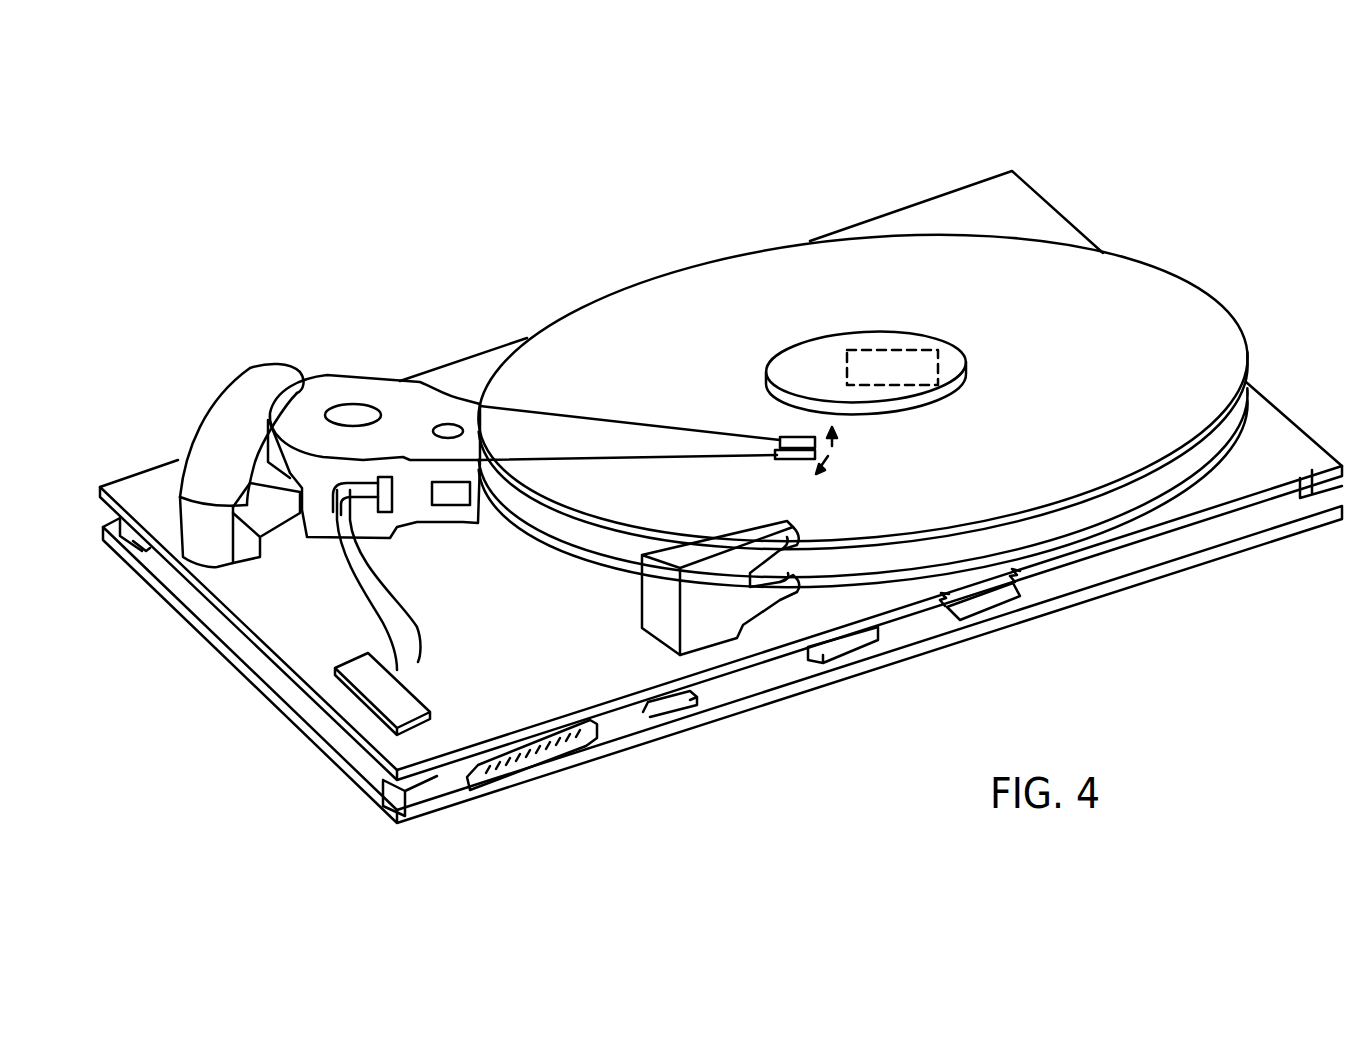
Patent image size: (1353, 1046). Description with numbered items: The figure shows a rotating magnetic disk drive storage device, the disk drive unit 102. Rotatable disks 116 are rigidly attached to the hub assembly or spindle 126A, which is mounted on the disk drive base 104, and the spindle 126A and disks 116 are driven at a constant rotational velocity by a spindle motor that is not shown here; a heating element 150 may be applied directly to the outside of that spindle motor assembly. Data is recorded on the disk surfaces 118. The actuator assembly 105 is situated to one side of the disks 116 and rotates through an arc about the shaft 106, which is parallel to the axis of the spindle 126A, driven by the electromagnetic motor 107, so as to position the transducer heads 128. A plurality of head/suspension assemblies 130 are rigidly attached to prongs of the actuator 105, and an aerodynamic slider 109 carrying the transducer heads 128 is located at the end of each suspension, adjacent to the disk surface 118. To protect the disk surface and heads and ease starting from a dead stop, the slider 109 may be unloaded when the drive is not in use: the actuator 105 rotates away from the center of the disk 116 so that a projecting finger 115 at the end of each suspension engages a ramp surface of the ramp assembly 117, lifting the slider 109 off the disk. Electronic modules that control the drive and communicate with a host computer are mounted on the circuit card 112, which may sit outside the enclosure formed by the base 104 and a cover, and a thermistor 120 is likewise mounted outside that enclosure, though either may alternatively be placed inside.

The disk drive unit 102 is at (923, 180).
The disk drive base 104 is at (1275, 423).
The actuator assembly 105 is at (373, 392).
The shaft 106 is at (353, 413).
The electromagnetic motor 107 is at (183, 452).
The aerodynamic slider 109 is at (800, 459).
The circuit card 112 is at (745, 707).
The projecting finger 115 is at (837, 447).
The rotatable disks 116 is at (1187, 480).
The ramp assembly 117 is at (720, 588).
The disk surface 118 is at (807, 268).
The thermistor 120 is at (1013, 603).
The spindle 126A is at (817, 360).
The transducer heads 128 is at (829, 450).
The head/suspension assemblies 130 is at (525, 430).
The heating element 150 is at (892, 367).